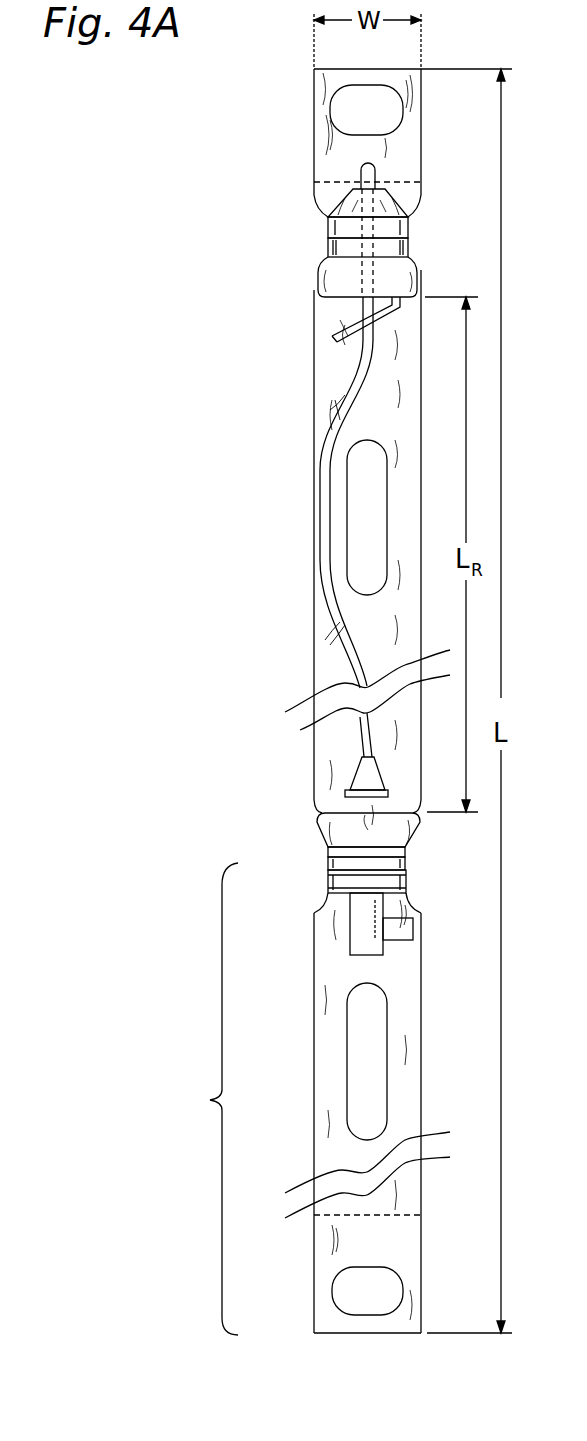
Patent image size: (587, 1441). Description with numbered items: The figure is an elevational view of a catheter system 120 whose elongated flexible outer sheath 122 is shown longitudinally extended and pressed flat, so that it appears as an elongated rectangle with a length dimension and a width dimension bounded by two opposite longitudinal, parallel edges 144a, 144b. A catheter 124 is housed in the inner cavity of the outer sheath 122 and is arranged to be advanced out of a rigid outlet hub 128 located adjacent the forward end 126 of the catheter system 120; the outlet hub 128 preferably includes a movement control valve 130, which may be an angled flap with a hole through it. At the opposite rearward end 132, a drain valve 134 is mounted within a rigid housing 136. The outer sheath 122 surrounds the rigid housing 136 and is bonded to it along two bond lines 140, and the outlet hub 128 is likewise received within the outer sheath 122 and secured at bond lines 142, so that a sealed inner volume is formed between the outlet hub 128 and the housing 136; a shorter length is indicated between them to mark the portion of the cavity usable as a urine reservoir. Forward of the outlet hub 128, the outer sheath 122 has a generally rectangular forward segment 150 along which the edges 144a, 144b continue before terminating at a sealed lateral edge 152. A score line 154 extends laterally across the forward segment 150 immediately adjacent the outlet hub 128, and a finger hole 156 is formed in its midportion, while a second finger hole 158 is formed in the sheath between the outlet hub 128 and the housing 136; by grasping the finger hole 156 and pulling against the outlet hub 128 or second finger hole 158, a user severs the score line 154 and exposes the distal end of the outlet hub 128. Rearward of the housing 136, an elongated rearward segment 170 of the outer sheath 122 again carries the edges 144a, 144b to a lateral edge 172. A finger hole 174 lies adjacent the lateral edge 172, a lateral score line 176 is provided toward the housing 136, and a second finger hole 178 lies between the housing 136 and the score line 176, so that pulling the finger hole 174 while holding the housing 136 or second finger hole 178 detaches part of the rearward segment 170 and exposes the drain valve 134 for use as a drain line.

The catheter system 120 is at (272, 212).
The outer sheath 122 is at (330, 383).
The catheter 124 is at (323, 468).
The forward end 126 is at (300, 70).
The rigid outlet hub 128 is at (325, 292).
The movement control valve 130 is at (328, 338).
The rearward end 132 is at (197, 1099).
The drain valve 134 is at (355, 922).
The rigid housing 136 is at (318, 847).
The bond lines 140 is at (410, 256).
The bond lines 142 is at (408, 872).
The longitudinal edge 144a is at (314, 158).
The longitudinal edge 144b is at (421, 150).
The forward segment 150 is at (322, 128).
The lateral edge 152 is at (336, 69).
The score line 154 is at (330, 192).
The finger hole 156 is at (347, 110).
The second finger hole 158 is at (362, 510).
The rearward segment 170 is at (330, 1242).
The lateral edge 172 is at (355, 1334).
The finger hole 174 is at (340, 1290).
The score line 176 is at (367, 1215).
The second finger hole 178 is at (365, 1050).